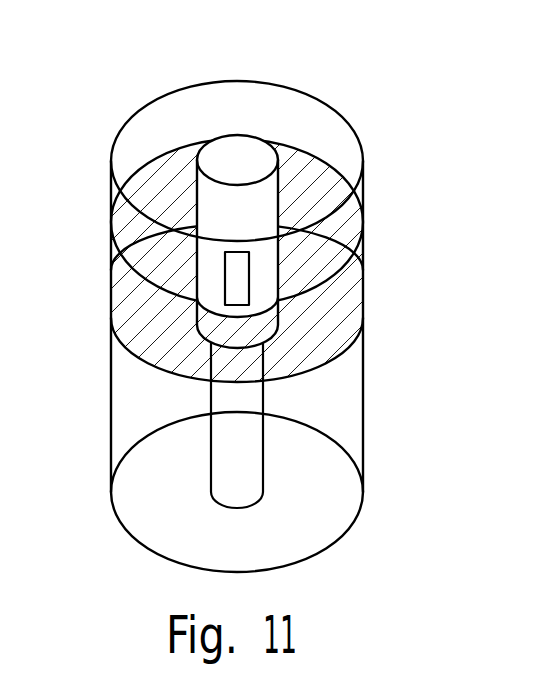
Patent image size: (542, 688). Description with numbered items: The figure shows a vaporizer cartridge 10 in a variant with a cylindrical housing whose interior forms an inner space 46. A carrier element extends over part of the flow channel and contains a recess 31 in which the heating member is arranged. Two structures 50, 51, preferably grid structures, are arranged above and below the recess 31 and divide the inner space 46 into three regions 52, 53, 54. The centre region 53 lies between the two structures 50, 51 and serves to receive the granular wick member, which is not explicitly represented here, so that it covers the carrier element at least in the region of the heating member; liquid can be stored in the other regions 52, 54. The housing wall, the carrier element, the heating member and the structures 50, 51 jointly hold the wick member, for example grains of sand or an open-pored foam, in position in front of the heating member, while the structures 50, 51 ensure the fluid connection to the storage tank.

The vaporizer cartridge 10 is at (325, 86).
The recess 31 is at (236, 270).
The inner space 46 is at (331, 390).
The structure 50 is at (363, 320).
The structure 51 is at (363, 240).
The centre region 53 is at (360, 265).
The region 52 is at (358, 437).
The region 54 is at (235, 108).